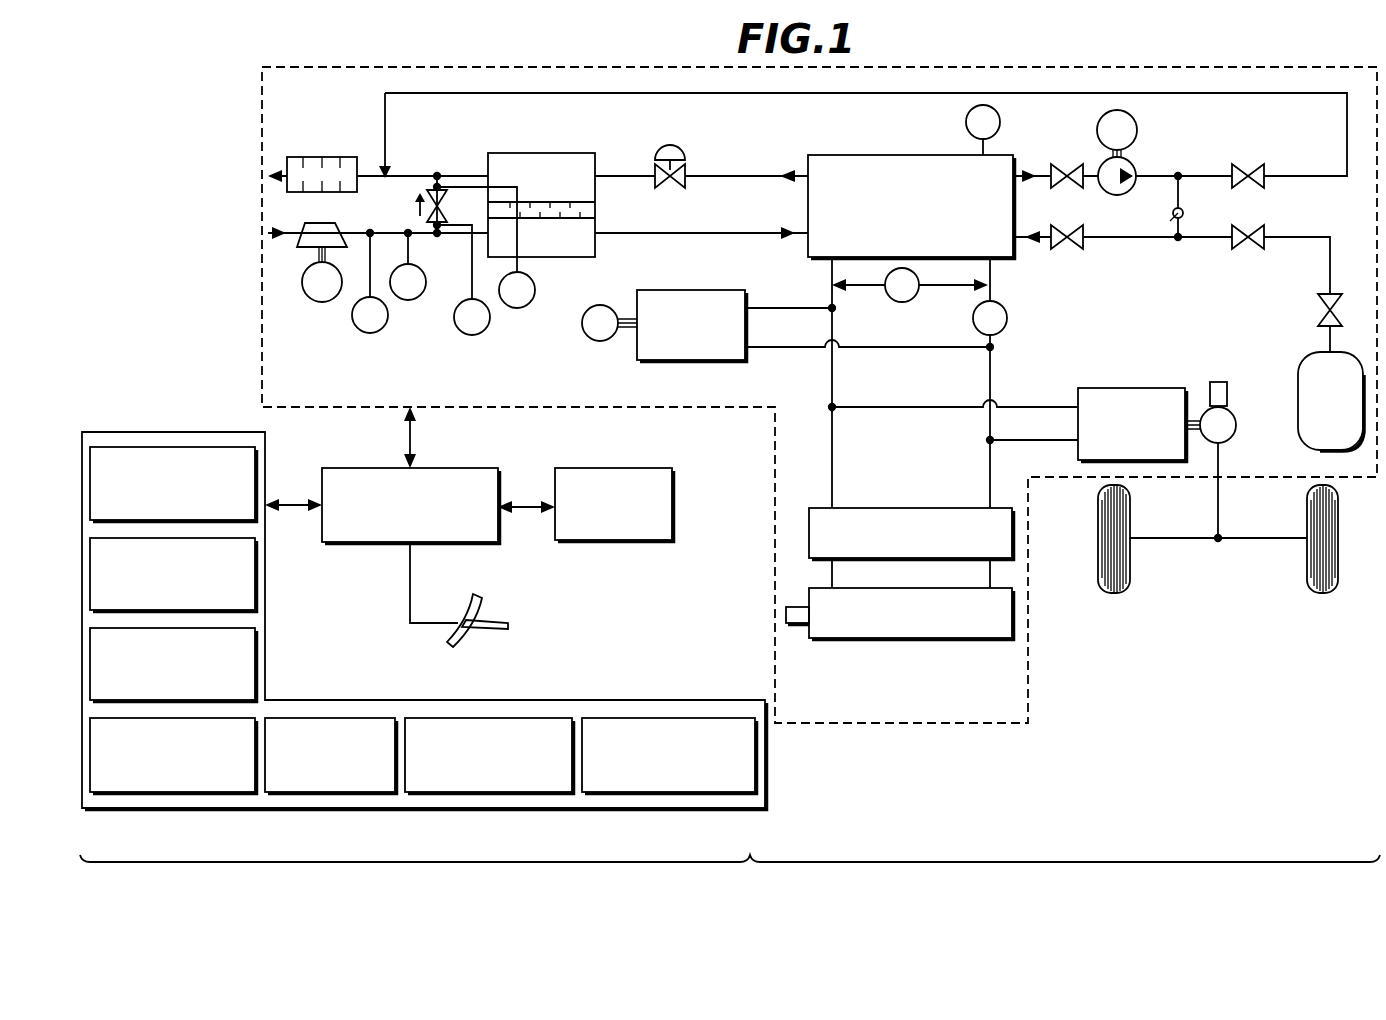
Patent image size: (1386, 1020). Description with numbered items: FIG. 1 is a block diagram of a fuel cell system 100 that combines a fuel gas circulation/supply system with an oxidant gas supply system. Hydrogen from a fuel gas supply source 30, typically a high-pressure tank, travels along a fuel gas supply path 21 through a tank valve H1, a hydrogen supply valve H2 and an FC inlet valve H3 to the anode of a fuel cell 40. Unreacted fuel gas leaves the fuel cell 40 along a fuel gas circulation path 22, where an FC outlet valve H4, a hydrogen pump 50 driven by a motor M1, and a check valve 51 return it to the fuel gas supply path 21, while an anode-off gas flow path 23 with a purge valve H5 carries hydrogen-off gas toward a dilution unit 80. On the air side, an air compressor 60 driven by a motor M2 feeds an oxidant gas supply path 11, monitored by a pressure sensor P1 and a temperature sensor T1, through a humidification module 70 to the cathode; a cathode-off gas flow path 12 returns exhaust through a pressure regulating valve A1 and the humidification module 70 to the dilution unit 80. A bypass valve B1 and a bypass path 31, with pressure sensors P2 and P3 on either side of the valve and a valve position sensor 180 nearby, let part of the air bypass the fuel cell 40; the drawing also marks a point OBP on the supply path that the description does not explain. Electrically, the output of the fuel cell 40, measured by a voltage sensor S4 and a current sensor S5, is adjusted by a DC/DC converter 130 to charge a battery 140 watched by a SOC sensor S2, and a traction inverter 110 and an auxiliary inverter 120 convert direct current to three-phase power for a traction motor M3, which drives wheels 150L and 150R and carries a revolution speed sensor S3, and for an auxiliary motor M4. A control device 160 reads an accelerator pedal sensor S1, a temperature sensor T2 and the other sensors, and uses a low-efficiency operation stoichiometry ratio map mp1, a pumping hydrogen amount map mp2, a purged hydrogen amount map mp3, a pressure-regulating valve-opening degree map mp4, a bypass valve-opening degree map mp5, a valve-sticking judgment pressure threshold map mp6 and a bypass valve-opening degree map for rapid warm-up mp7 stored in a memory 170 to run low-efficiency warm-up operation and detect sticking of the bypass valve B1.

The fuel cell system 100 is at (730, 482).
The anode-off gas flow path 23 is at (1300, 176).
The dilution unit 80 is at (313, 157).
The bypass path 31 is at (437, 174).
The oxidant gas supply path 11 is at (437, 236).
The bypass valve B1 is at (447, 206).
The pressure sensor P2 is at (463, 280).
The pressure sensor P3 is at (486, 247).
The humidification module 70 is at (560, 153).
The air compressor 60 is at (305, 246).
The motor for driving the air compressor M2 is at (322, 282).
The bypass pipe inlet OBP is at (373, 220).
The pressure sensor P1 is at (370, 283).
The temperature sensor T1 is at (408, 265).
The cathode-off gas flow path 12 is at (608, 176).
The pressure regulating valve A1 is at (668, 145).
The fuel cell 40 is at (858, 155).
The temperature sensor T2 is at (983, 130).
The FC outlet valve H4 is at (1067, 166).
The hydrogen pump 50 is at (1138, 168).
The motor for driving the hydrogen circulation pump M1 is at (1117, 133).
The fuel gas circulation path 22 is at (1163, 180).
The check valve 51 is at (1188, 214).
The purge valve H5 is at (1262, 166).
The fuel gas supply path 21 is at (1163, 240).
The FC inlet valve H3 is at (1067, 251).
The hydrogen supply valve H2 is at (1281, 259).
The tank valve H1 is at (1347, 323).
The fuel gas supply source 30 is at (1298, 392).
The voltage sensor S4 is at (896, 302).
The current sensor S5 is at (1005, 325).
The auxiliary inverter 120 is at (680, 290).
The auxiliary motor M4 is at (609, 323).
The traction inverter 110 is at (1110, 388).
The traction motor M3 is at (1210, 472).
The T/C motor revolution speed sensor S3 is at (1218, 382).
The wheel 150L is at (1110, 593).
The wheel 150R is at (1322, 593).
The DC/DC converter 130 is at (885, 508).
The battery 140 is at (900, 640).
The SOC sensor S2 is at (792, 625).
The memory 170 is at (222, 432).
The low-efficiency operation stoichiometry ratio map mp1 is at (257, 473).
The pumping hydrogen amount map mp2 is at (257, 583).
The purged hydrogen amount map mp3 is at (257, 668).
The pressure-regulating valve-opening degree map mp4 is at (180, 792).
The bypass valve-opening degree map mp5 is at (335, 792).
The valve-sticking judgment pressure threshold map mp6 is at (490, 792).
The bypass valve-opening degree map for the rapid warm-up mp7 is at (665, 792).
The control device 160 is at (455, 468).
The valve position sensor 180 is at (618, 542).
The accelerator pedal sensor S1 is at (466, 602).